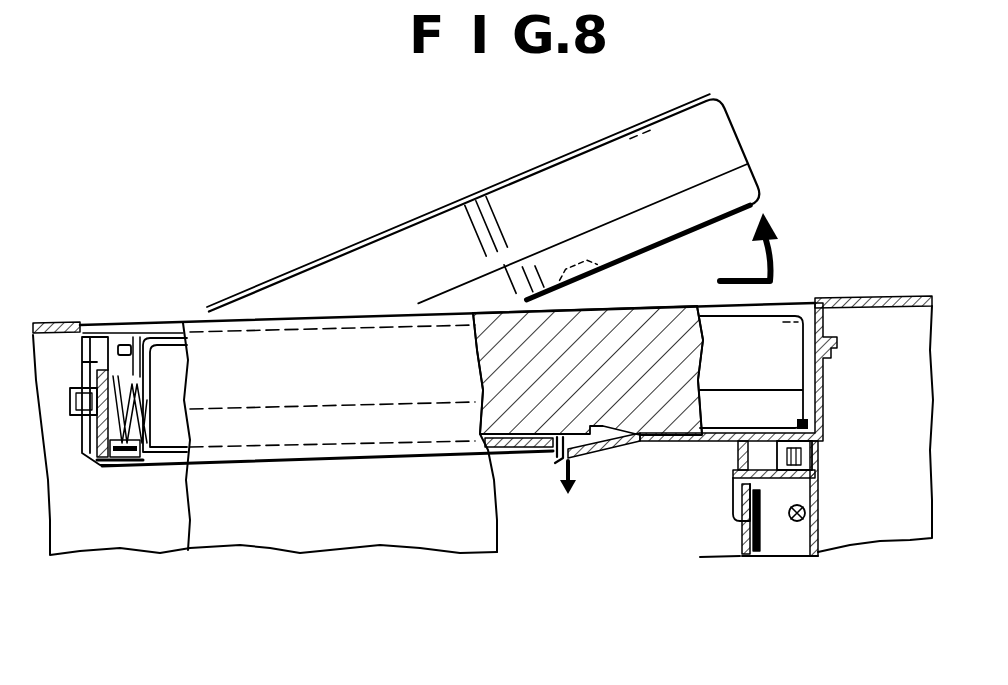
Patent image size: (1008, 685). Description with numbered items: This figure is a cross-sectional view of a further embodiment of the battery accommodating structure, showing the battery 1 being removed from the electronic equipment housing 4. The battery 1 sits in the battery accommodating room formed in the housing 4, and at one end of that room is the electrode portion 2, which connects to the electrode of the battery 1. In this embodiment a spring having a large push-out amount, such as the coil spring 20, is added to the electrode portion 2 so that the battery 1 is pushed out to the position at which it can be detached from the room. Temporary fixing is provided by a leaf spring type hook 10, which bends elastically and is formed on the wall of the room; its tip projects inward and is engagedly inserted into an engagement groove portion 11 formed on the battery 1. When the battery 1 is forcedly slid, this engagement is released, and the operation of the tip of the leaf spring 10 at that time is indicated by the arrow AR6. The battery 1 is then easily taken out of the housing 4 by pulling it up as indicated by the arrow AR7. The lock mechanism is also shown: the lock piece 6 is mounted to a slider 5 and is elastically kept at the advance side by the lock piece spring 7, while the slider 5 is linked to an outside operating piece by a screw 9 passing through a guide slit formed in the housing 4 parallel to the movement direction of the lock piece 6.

The battery 1 is at (570, 178).
The electrode portion 2 is at (128, 466).
The electronic equipment housing 4 is at (893, 300).
The slider 5 is at (773, 527).
The lock piece 6 is at (829, 408).
The lock piece spring 7 is at (815, 448).
The screw 9 is at (797, 522).
The leaf spring type hook 10 is at (580, 455).
The engagement groove portion 11 is at (623, 450).
The coil spring 20 is at (129, 342).
The arrow AR6 is at (560, 468).
The arrow AR7 is at (776, 271).